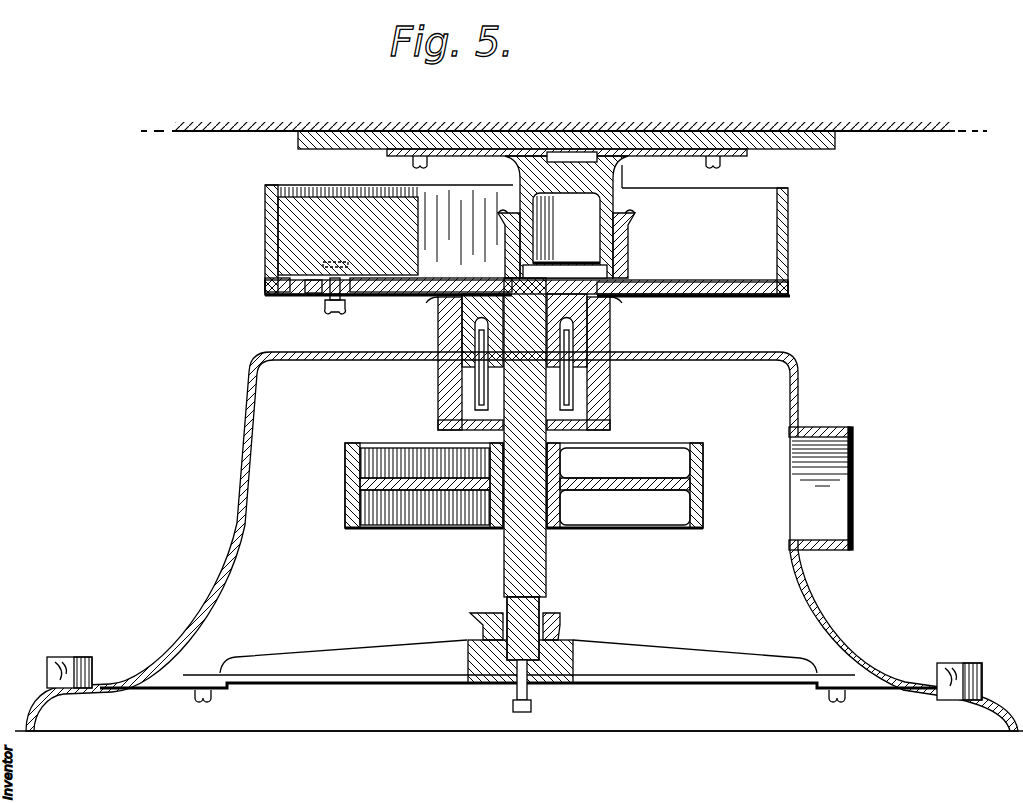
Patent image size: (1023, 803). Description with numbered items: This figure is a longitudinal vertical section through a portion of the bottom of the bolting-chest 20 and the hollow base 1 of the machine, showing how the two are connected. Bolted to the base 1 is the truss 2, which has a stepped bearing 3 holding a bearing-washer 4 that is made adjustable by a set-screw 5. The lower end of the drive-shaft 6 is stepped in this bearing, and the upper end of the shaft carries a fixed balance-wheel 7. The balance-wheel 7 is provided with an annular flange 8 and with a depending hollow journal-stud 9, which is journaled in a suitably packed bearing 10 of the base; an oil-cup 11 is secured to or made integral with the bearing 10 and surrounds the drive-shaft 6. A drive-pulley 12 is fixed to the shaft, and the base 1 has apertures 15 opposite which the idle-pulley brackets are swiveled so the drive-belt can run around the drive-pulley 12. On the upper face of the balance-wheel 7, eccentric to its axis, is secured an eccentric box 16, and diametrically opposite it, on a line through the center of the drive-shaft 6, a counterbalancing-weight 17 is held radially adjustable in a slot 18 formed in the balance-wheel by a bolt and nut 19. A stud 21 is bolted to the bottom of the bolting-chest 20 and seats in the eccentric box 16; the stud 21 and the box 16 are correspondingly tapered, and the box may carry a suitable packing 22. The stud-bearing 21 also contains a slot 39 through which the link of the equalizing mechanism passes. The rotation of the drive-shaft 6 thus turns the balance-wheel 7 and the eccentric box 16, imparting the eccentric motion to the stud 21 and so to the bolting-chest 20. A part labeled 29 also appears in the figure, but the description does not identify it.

The hollow base 1 is at (263, 520).
The truss 2 is at (653, 660).
The stepped bearing 3 is at (548, 640).
The bearing-washer 4 is at (500, 681).
The set-screw 5 is at (528, 693).
The drive-shaft 6 is at (517, 543).
The balance-wheel 7 is at (752, 279).
The annular flange 8 is at (789, 208).
The hollow journal-stud 9 is at (613, 318).
The bearing 10 is at (612, 403).
The oil-cup 11 is at (475, 398).
The drive-pulley 12 is at (675, 508).
The apertures 15 is at (788, 507).
The eccentric box 16 is at (630, 257).
The counterbalancing-weight 17 is at (292, 237).
The slot 18 is at (313, 281).
The bolt and nut 19 is at (340, 291).
The bolting-chest 20 is at (892, 133).
The stud 21 is at (562, 228).
The packing 22 is at (623, 230).
The foot 29 is at (76, 662).
The slot 39 is at (603, 132).